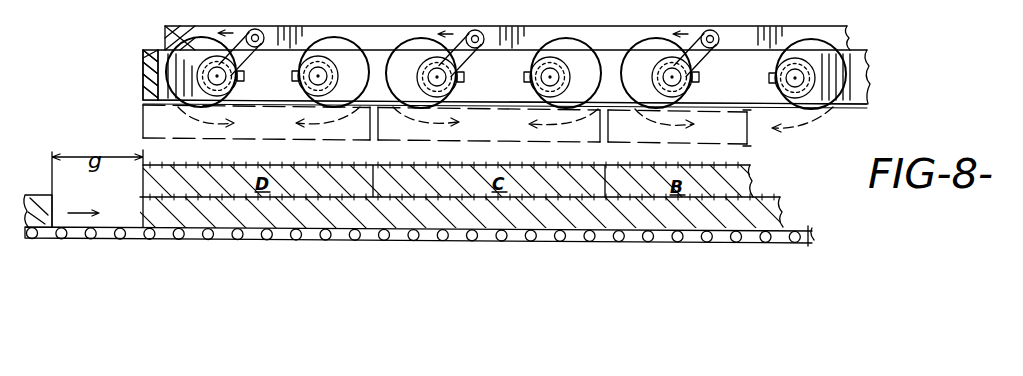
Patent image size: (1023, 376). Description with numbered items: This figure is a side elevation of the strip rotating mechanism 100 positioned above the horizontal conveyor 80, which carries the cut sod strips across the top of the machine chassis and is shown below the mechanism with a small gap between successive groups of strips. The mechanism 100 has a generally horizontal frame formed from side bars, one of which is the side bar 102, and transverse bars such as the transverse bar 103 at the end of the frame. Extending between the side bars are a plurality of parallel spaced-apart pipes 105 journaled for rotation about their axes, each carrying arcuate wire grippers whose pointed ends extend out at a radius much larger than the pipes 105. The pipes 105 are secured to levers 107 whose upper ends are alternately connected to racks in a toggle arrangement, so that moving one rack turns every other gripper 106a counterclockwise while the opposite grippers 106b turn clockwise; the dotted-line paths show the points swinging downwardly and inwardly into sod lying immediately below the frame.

The horizontal conveyor 80 is at (803, 217).
The strip rotating mechanism 100 is at (895, 83).
The side bar 102 is at (860, 107).
The transverse bar 103 is at (143, 67).
The pipe 105 is at (457, 86).
The gripper 106a is at (245, 5).
The gripper 106b is at (348, 42).
The lever 107 is at (244, 58).